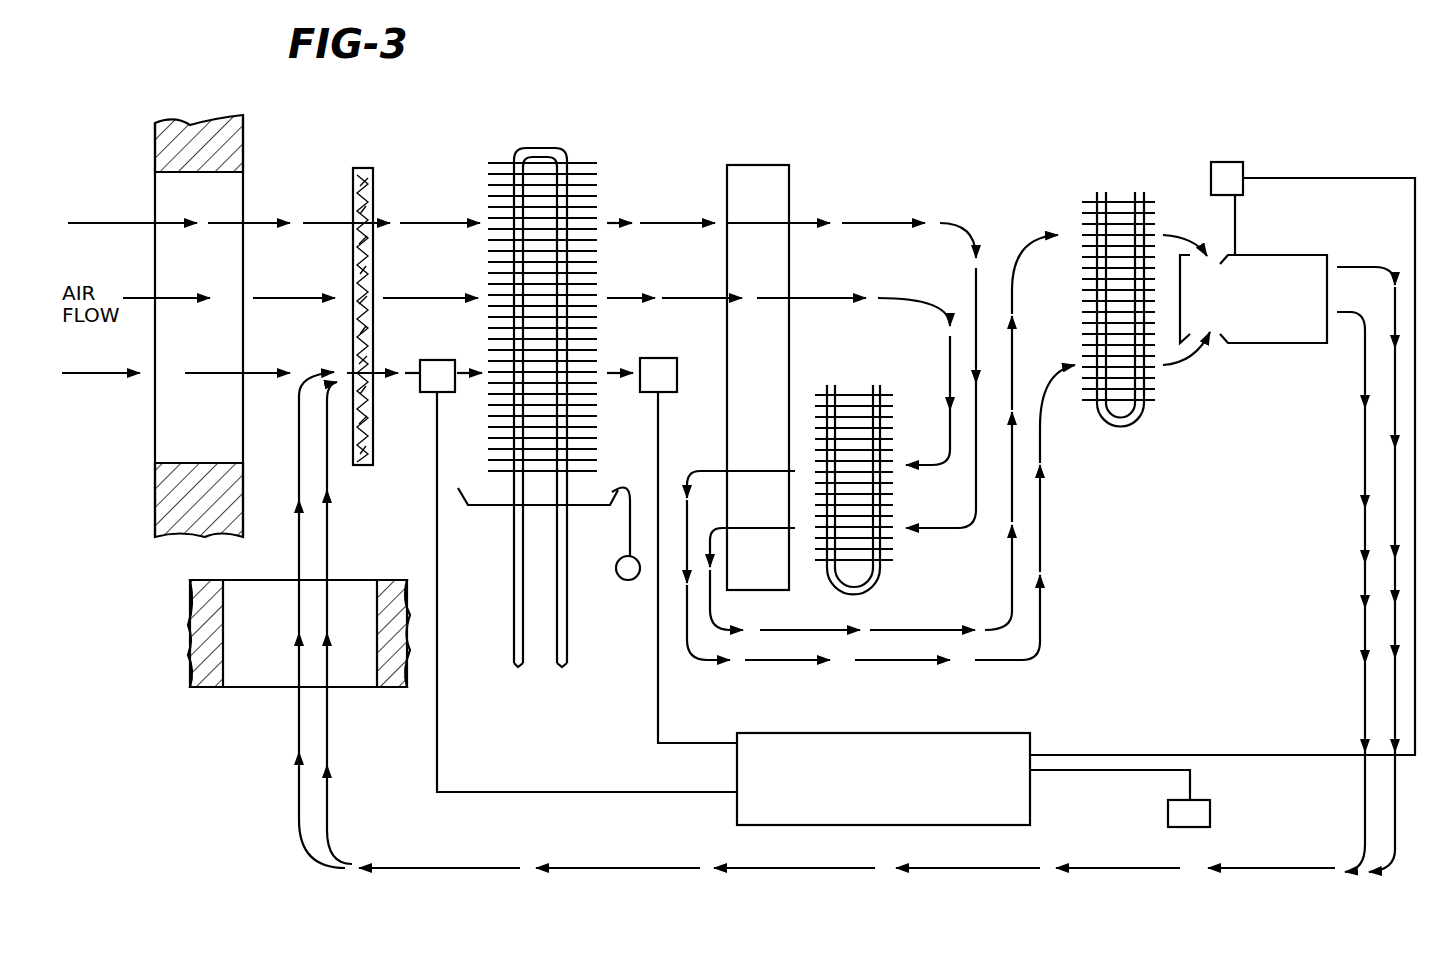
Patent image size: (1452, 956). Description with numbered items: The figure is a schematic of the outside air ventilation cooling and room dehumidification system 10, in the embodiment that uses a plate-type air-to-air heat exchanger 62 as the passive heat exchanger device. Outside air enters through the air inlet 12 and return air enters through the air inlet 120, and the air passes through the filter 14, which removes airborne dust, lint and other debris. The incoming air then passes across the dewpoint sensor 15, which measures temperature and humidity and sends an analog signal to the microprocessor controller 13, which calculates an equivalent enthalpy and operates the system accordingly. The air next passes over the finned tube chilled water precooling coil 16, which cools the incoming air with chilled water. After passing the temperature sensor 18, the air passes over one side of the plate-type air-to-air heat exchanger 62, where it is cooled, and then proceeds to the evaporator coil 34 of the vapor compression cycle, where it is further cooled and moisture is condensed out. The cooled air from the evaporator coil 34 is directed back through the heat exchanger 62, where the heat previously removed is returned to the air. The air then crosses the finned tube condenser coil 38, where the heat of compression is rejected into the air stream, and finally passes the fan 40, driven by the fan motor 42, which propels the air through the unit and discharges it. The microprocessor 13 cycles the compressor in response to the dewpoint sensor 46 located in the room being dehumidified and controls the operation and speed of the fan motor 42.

The outside air ventilation cooling and room dehumidification system 10 is at (284, 116).
The air inlet 12 is at (162, 462).
The microprocessor controller 13 is at (781, 715).
The filter 14 is at (358, 168).
The dewpoint sensor 15 is at (440, 360).
The finned tube chilled water precooling coil 16 is at (492, 162).
The temperature sensor 18 is at (656, 358).
The evaporator coil 34 is at (880, 385).
The condenser coil 38 is at (1085, 202).
The fan 40 is at (1298, 255).
The fan motor 42 is at (1243, 162).
The dewpoint sensor 46 is at (1210, 814).
The plate-type air-to-air heat exchanger 62 is at (748, 165).
The air inlet 120 is at (348, 580).